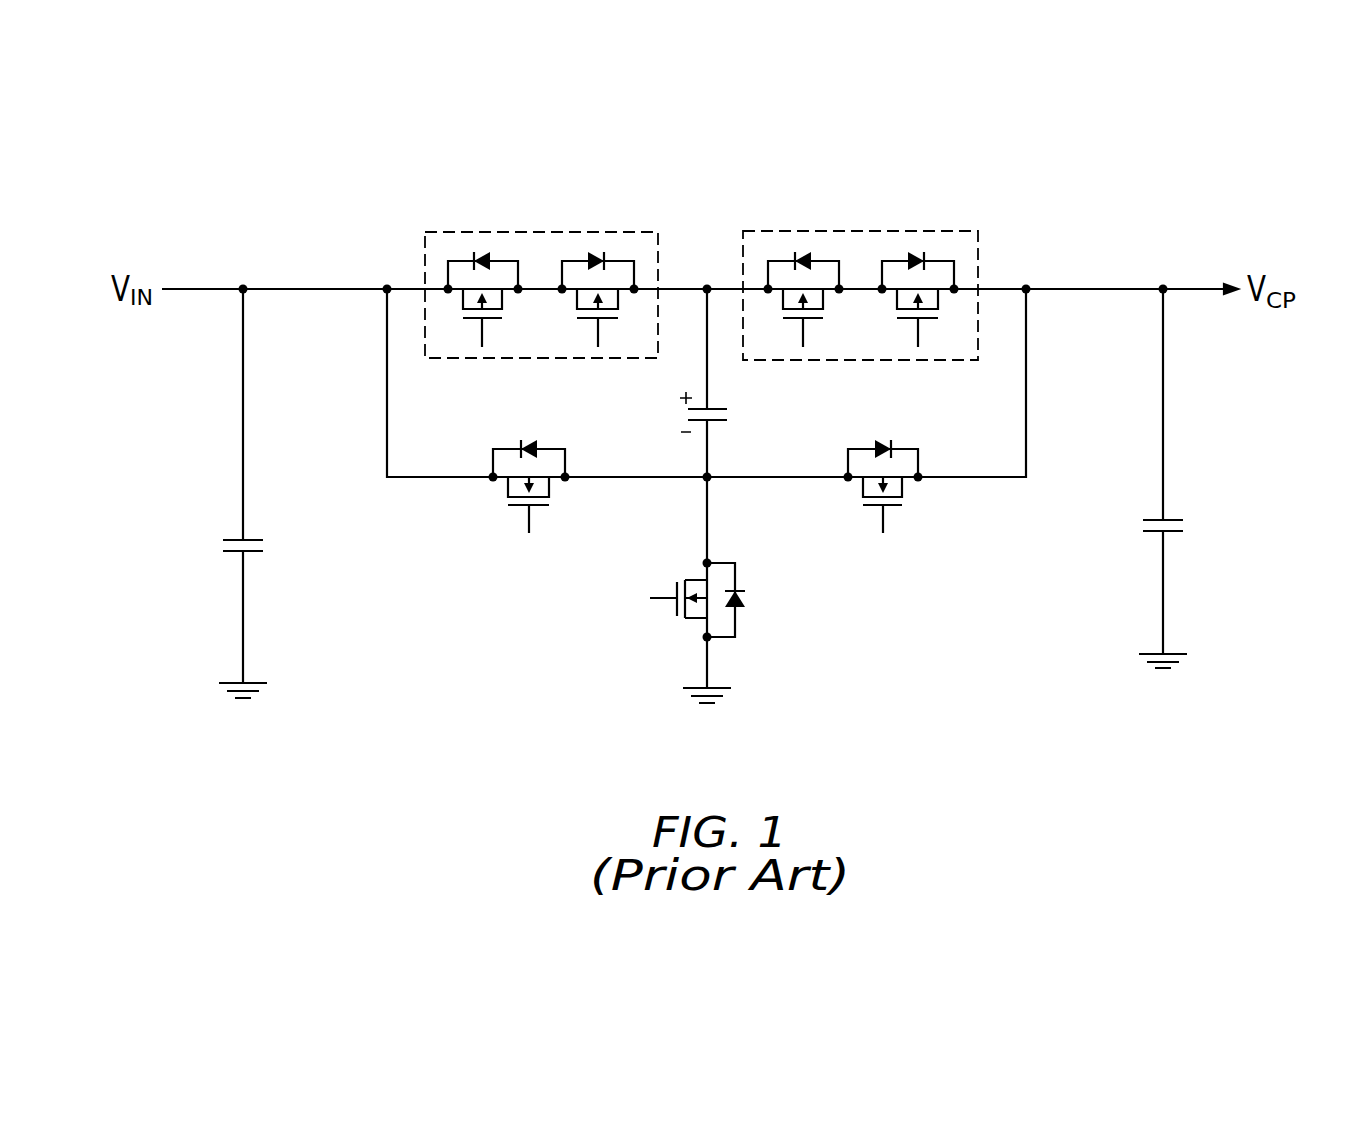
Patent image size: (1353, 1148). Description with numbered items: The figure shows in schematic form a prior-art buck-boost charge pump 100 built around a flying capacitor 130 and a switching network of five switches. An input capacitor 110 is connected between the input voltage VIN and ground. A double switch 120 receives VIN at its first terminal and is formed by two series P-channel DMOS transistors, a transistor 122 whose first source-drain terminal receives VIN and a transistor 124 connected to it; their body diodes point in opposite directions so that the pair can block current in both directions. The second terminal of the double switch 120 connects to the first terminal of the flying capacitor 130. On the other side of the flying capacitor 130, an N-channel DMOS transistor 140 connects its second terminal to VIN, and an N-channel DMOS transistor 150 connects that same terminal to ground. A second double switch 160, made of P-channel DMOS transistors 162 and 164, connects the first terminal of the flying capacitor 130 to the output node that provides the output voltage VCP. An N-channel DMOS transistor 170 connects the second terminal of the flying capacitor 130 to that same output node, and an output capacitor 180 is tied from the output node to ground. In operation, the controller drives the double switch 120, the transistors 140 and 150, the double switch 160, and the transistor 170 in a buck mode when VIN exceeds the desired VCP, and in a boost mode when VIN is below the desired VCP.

The buck-boost charge pump 100 is at (182, 134).
The input capacitor 110 is at (228, 540).
The double switch 120 is at (575, 231).
The transistor 122 is at (463, 310).
The transistor 124 is at (577, 310).
The flying capacitor 130 is at (720, 409).
The transistor 140 is at (509, 498).
The transistor 150 is at (697, 580).
The double switch 160 is at (933, 231).
The transistor 162 is at (783, 310).
The transistor 164 is at (897, 310).
The transistor 170 is at (864, 498).
The output capacitor 180 is at (1175, 519).